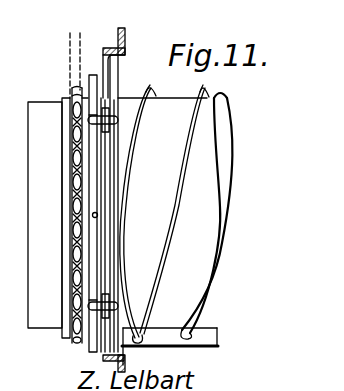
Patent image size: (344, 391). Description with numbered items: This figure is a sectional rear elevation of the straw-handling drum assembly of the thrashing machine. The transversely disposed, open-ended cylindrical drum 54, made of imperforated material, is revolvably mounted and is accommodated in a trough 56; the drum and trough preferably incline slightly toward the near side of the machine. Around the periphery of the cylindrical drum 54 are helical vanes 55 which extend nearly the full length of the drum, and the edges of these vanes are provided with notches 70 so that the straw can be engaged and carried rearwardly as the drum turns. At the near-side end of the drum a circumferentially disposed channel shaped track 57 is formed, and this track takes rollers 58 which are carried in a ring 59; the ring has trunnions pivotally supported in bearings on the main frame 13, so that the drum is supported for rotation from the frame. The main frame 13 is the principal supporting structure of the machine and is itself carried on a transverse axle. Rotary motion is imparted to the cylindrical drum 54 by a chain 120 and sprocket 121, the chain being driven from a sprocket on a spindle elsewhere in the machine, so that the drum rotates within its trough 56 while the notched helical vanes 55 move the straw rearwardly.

The main frame 13 is at (118, 363).
The cylindrical drum 54 is at (140, 214).
The helical vanes 55 is at (197, 100).
The trough 56 is at (159, 347).
The channel shaped track 57 is at (118, 96).
The rollers 58 is at (110, 124).
The ring 59 is at (93, 75).
The notches 70 is at (208, 86).
The chain 120 is at (67, 49).
The sprocket 121 is at (71, 96).